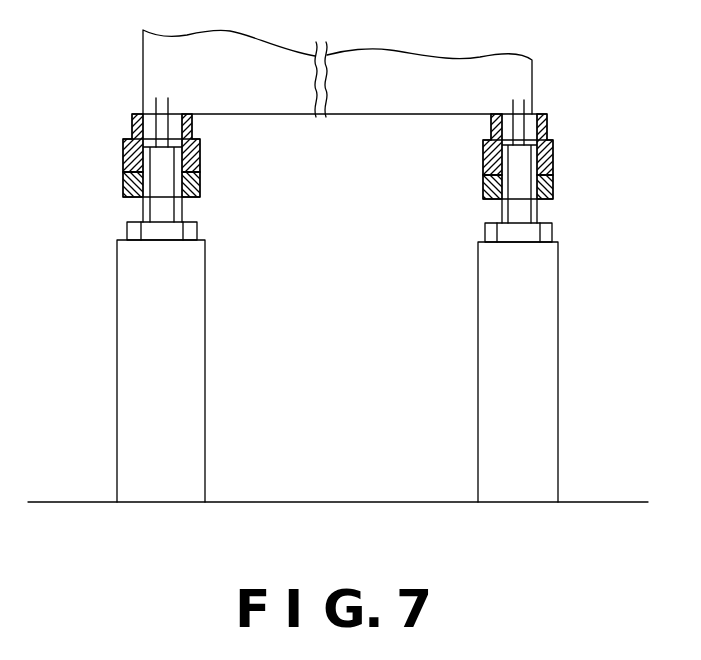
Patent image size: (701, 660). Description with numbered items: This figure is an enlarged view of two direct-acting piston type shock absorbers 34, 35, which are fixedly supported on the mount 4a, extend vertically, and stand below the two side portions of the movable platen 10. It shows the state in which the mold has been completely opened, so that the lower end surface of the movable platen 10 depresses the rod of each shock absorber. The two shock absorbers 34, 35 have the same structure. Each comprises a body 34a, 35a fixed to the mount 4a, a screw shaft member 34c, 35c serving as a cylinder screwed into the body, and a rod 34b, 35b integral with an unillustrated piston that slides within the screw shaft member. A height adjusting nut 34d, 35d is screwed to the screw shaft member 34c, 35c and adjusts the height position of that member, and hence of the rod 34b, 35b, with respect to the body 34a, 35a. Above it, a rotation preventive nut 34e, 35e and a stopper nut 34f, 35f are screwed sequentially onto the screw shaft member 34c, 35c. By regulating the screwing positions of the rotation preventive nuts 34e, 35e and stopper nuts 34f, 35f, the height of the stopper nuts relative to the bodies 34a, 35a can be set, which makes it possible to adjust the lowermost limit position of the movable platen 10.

The movable platen 10 is at (460, 80).
The mount 4a is at (315, 522).
The shock absorber 34 is at (150, 278).
The body 34a is at (128, 435).
The rod 34b is at (162, 125).
The screw shaft member 34c is at (168, 203).
The height adjusting nut 34d is at (137, 225).
The rotation preventive nut 34e is at (125, 192).
The stopper nut 34f is at (123, 157).
The shock absorber 35 is at (518, 280).
The body 35a is at (540, 440).
The rod 35b is at (522, 130).
The screw shaft member 35c is at (522, 208).
The height adjusting nut 35d is at (547, 233).
The rotation preventive nut 35e is at (553, 182).
The stopper nut 35f is at (553, 148).